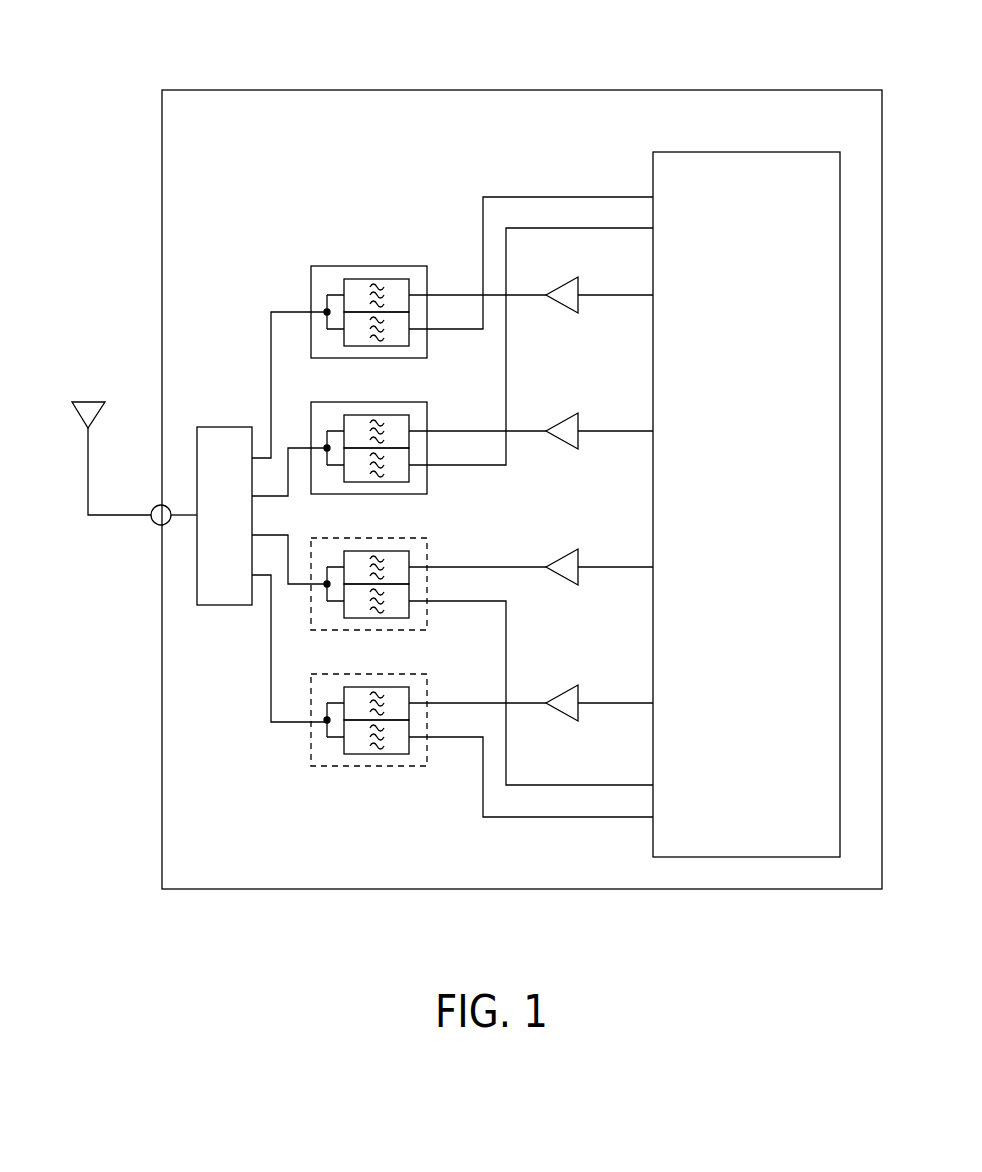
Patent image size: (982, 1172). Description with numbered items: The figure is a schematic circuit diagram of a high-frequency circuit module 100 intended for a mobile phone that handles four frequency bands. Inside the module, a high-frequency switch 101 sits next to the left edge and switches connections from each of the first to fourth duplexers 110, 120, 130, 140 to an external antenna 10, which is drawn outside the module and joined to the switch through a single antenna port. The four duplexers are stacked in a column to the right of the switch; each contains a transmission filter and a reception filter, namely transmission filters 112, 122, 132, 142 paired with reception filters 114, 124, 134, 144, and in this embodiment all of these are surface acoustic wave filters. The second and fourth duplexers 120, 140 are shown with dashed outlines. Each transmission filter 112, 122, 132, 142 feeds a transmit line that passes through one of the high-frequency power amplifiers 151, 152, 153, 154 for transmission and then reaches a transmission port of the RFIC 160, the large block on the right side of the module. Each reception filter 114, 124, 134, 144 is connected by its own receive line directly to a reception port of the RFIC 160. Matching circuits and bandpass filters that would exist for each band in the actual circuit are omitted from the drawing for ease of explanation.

The high-frequency circuit module 100 is at (520, 90).
The external antenna 10 is at (93, 402).
The high-frequency switch 101 is at (226, 427).
The first duplexer 110 is at (341, 305).
The transmission filter 112 is at (377, 279).
The reception filter 114 is at (377, 346).
The third duplexer 130 is at (327, 414).
The transmission filter 132 is at (377, 415).
The reception filter 134 is at (377, 482).
The second duplexer 120 is at (332, 584).
The transmission filter 122 is at (377, 551).
The reception filter 124 is at (377, 618).
The fourth duplexer 140 is at (346, 724).
The transmission filter 142 is at (377, 687).
The reception filter 144 is at (377, 754).
The high-frequency power amplifier 151 is at (578, 286).
The high-frequency power amplifier 152 is at (578, 558).
The high-frequency power amplifier 153 is at (578, 422).
The high-frequency power amplifier 154 is at (578, 694).
The RFIC 160 is at (748, 152).